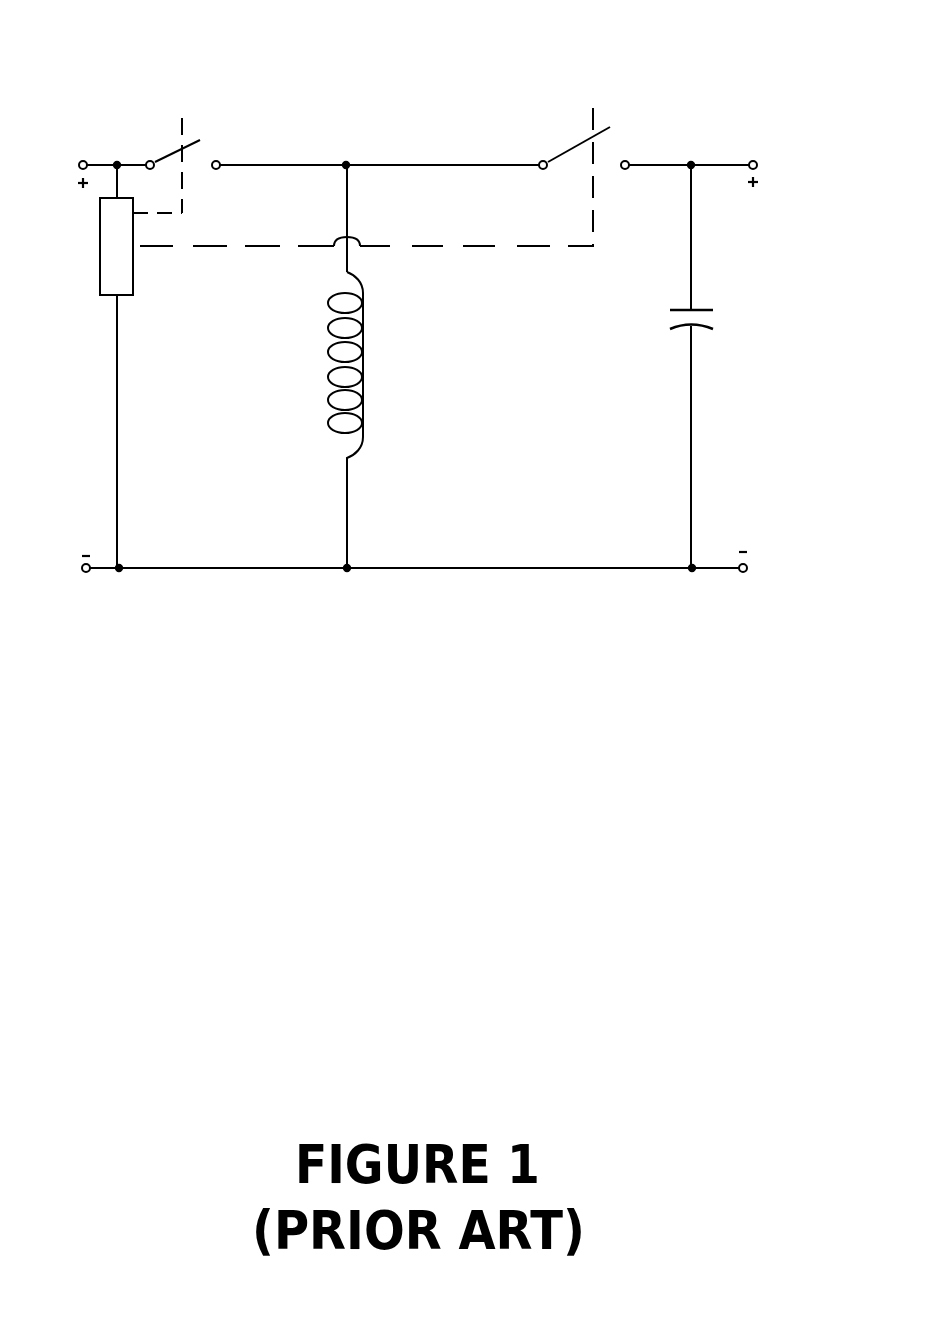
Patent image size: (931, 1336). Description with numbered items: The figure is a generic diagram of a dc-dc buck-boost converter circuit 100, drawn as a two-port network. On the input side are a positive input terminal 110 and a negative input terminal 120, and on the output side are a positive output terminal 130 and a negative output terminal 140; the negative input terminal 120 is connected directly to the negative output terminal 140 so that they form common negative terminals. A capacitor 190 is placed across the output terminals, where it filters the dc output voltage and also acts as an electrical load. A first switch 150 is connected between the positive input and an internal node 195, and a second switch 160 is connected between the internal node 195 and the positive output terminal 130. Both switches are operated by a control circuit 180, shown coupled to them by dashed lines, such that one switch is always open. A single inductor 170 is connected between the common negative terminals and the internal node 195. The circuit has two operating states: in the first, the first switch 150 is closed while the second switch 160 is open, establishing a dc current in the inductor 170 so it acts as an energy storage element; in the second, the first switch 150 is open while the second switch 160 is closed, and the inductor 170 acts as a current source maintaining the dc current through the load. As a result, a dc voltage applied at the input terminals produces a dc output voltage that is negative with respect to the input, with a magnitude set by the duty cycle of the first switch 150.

The dc-dc buck-boost converter circuit 100 is at (90, 24).
The positive input terminal 110 is at (73, 162).
The negative input terminal 120 is at (73, 572).
The positive output terminal 130 is at (763, 160).
The negative output terminal 140 is at (753, 568).
The first switch 150 is at (167, 150).
The second switch 160 is at (565, 147).
The inductor 170 is at (370, 407).
The control circuit 180 is at (95, 278).
The capacitor 190 is at (715, 318).
The internal node 195 is at (349, 160).